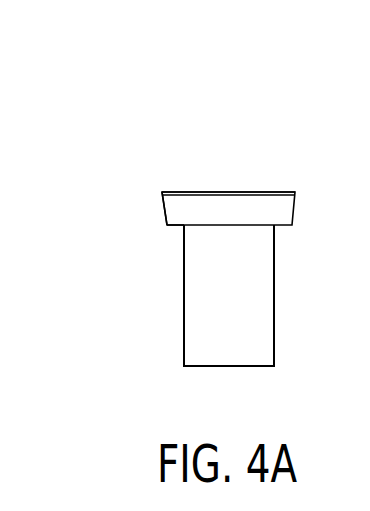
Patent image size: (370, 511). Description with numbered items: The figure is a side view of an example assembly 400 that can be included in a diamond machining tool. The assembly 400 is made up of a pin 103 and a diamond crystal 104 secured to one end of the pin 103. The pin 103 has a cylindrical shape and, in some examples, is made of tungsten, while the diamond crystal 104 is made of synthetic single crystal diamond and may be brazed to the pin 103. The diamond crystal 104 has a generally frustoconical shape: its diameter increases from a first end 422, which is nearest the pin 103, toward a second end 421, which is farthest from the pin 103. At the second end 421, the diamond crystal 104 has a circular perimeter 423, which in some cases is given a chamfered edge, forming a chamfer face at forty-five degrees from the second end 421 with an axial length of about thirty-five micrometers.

The assembly 400 is at (93, 112).
The diamond crystal 104 is at (296, 208).
The second end 421 is at (222, 190).
The circular perimeter 423 is at (160, 191).
The first end 422 is at (177, 227).
The pin 103 is at (275, 295).